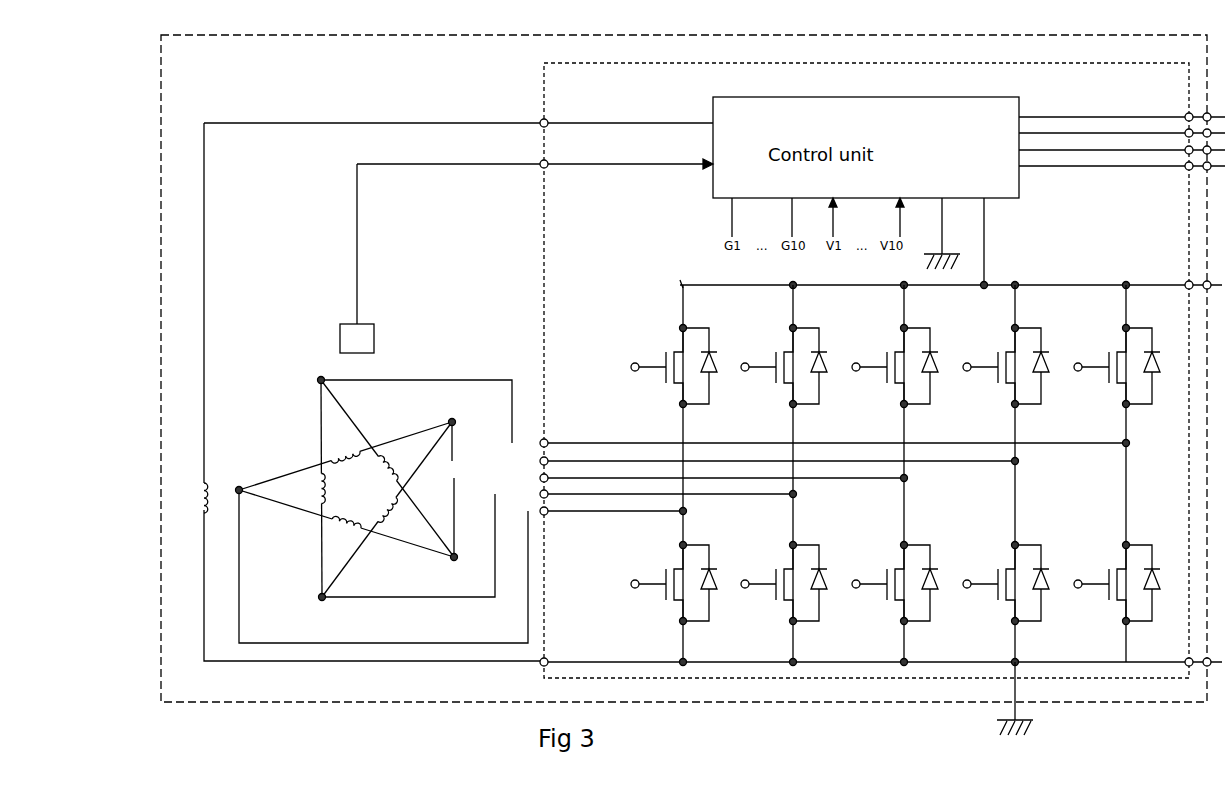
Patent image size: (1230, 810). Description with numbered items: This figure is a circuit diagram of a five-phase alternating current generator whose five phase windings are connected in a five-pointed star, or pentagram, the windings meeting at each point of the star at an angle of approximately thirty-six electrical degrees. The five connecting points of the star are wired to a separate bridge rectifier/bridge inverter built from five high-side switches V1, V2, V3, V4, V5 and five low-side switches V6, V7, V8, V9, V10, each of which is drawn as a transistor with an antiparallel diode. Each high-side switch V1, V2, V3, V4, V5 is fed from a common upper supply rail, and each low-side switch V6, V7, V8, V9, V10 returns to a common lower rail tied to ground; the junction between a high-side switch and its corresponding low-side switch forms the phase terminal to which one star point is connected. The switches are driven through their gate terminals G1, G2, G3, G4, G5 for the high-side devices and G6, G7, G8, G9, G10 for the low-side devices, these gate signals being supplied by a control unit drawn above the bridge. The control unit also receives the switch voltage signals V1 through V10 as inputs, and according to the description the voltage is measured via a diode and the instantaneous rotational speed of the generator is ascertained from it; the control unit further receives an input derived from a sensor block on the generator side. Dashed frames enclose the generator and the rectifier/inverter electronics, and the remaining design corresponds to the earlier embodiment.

The gate terminal of switch V1 G1 is at (645, 364).
The gate terminal of switch V2 G2 is at (755, 364).
The gate terminal of switch V3 G3 is at (866, 364).
The gate terminal of switch V4 G4 is at (977, 364).
The gate terminal of switch V5 G5 is at (1088, 364).
The gate terminal of switch V6 G6 is at (645, 581).
The gate terminal of switch V7 G7 is at (755, 581).
The gate terminal of switch V8 G8 is at (866, 581).
The gate terminal of switch V9 G9 is at (977, 581).
The gate terminal of switch V10 G10 is at (1087, 581).
The semiconductor switch V1 is at (674, 367).
The semiconductor switch V2 is at (784, 367).
The semiconductor switch V3 is at (895, 367).
The semiconductor switch V4 is at (1006, 367).
The semiconductor switch V5 is at (1117, 367).
The semiconductor switch V6 is at (674, 584).
The semiconductor switch V7 is at (784, 584).
The semiconductor switch V8 is at (895, 584).
The semiconductor switch V9 is at (1006, 584).
The semiconductor switch V10 is at (1116, 584).